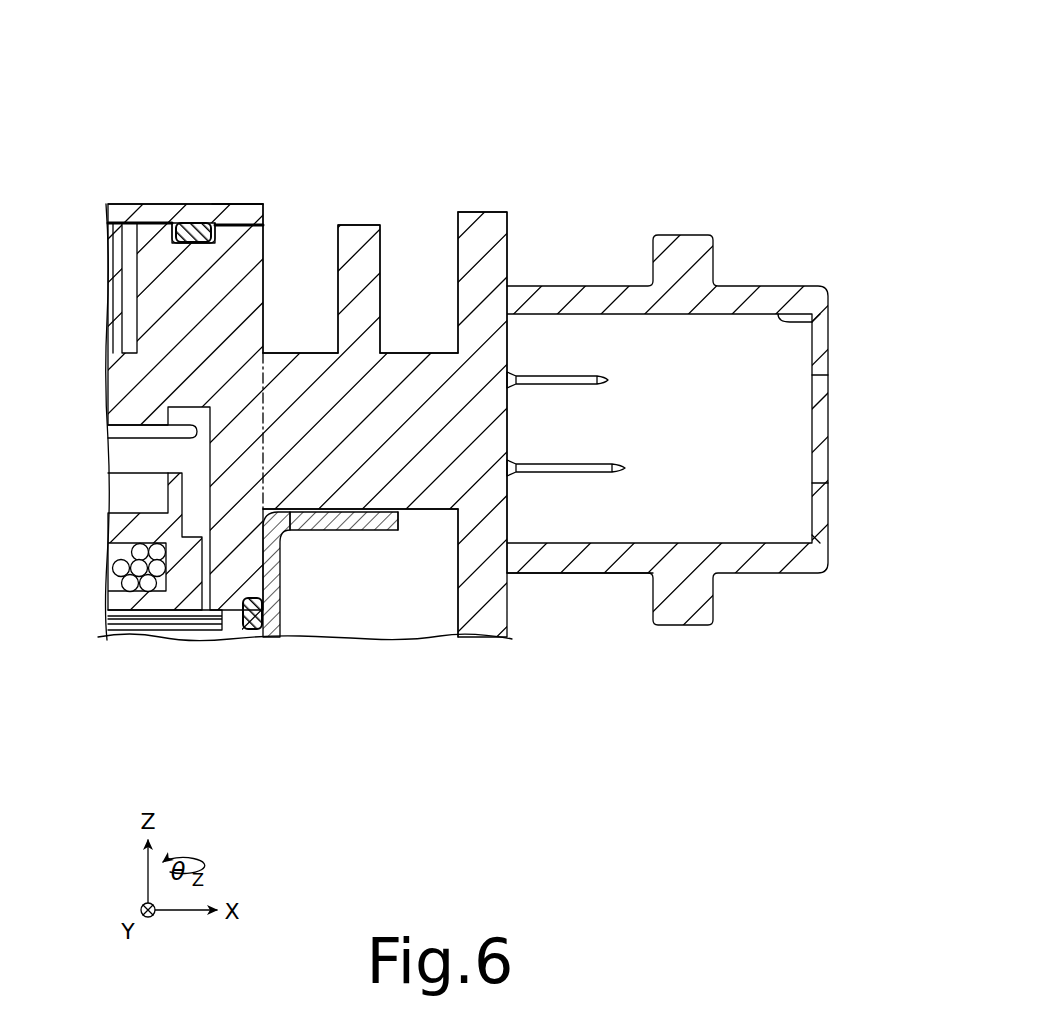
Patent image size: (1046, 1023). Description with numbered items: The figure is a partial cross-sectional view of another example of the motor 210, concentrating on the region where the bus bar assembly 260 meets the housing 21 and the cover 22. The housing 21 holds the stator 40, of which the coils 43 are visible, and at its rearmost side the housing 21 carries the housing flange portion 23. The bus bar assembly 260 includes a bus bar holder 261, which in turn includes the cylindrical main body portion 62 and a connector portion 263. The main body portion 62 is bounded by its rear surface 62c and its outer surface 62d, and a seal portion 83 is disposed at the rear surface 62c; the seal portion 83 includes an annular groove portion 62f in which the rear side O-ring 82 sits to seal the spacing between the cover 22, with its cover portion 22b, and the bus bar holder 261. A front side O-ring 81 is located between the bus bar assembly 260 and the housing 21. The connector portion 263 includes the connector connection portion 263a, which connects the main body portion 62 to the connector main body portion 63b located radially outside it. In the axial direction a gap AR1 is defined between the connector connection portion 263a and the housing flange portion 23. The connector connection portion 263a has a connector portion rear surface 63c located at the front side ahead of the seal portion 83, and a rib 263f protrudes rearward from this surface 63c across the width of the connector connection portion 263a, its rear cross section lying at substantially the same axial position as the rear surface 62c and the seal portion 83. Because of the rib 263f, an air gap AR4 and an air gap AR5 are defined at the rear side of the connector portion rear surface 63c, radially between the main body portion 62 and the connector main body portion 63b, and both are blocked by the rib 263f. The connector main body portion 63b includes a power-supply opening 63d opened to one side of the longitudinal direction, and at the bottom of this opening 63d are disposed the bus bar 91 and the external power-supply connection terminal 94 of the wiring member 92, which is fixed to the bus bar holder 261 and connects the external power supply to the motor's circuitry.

The motor 210 is at (720, 130).
The cover 22 is at (70, 146).
The cover portion 22b is at (131, 209).
The seal portion 83 is at (169, 219).
The rear side O-ring 82 is at (192, 222).
The groove portion 62f is at (200, 222).
The rear surface of the main body portion 62c is at (237, 222).
The outer surface of the main body portion 62d is at (264, 290).
The air gap AR4 is at (316, 262).
The rib 263f is at (357, 243).
The connector portion rear surface 63c is at (410, 354).
The air gap AR5 is at (436, 259).
The bus bar holder 261 is at (510, 239).
The bus bar assembly 260 is at (754, 611).
The power-supply opening 63d is at (778, 318).
The connector main body portion 63b is at (585, 565).
The wiring member 92 is at (617, 398).
The external power-supply connection terminal 94 is at (586, 378).
The bus bar 91 is at (576, 468).
The main body portion 62 is at (170, 373).
The coils 43 is at (110, 582).
The stator 40 is at (121, 639).
The front side O-ring 81 is at (250, 633).
The housing 21 is at (284, 616).
The housing flange portion 23 is at (308, 524).
The gap AR1 is at (408, 523).
The connector connection portion 263a is at (360, 470).
The connector portion 263 is at (520, 748).